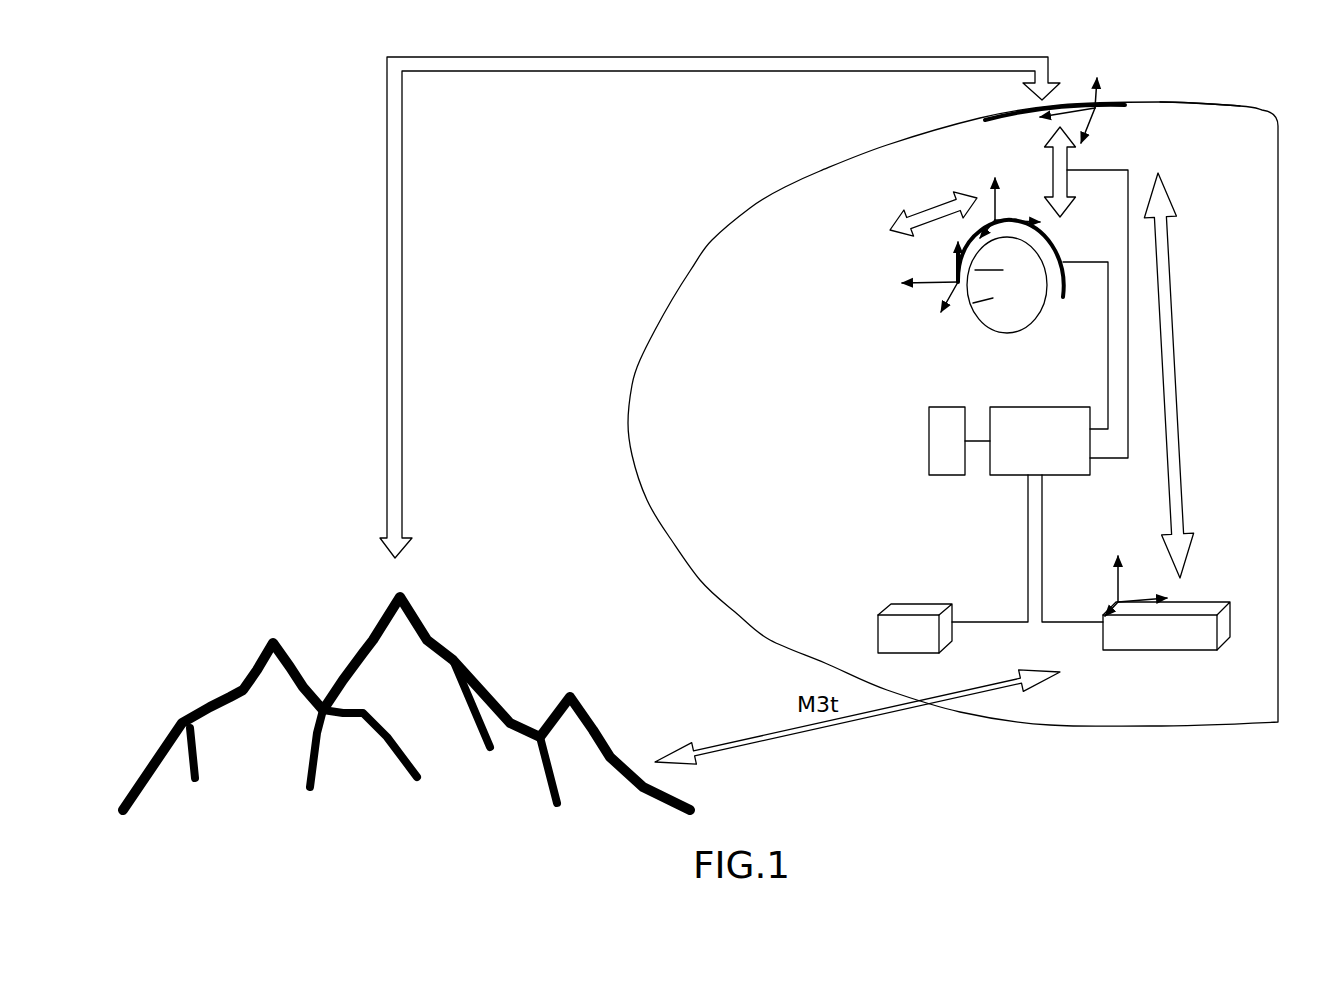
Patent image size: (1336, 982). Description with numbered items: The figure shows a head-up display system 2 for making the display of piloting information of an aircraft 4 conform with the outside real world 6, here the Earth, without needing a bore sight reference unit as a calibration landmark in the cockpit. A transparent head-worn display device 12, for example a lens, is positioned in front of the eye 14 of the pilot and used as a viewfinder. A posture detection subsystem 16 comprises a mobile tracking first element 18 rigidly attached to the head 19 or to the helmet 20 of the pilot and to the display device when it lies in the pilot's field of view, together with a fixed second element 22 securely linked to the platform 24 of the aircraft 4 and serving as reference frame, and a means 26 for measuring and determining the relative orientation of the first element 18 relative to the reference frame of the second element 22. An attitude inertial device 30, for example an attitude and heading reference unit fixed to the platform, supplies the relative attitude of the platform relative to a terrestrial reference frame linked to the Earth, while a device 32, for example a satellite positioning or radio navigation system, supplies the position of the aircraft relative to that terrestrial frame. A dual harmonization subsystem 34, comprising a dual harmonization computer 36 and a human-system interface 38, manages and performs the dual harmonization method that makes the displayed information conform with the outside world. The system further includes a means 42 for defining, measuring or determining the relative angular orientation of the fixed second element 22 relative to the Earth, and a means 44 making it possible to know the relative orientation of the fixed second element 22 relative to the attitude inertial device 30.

The head-up display system 2 is at (827, 197).
The aircraft 4 is at (756, 517).
The outside real world 6 is at (215, 655).
The transparent head-worn display device 12 is at (958, 248).
The eye 14 is at (990, 273).
The posture detection subsystem 16 is at (973, 165).
The mobile tracking first element 18 is at (1020, 215).
The head 19 is at (975, 320).
The helmet 20 is at (1063, 297).
The fixed second element 22 is at (1008, 113).
The platform 24 is at (1160, 102).
The means for measuring and determining relative orientation 26 is at (1070, 162).
The attitude inertial device 30 is at (1152, 652).
The device for supplying the position of the aircraft 32 is at (910, 612).
The dual harmonization subsystem 34 is at (978, 490).
The dual harmonization computer 36 is at (1054, 464).
The human-system interface 38 is at (929, 450).
The means for determining relative angular orientation of the fixed second element r 42 is at (585, 72).
The means for knowing the relative orientation of the fixed second element relative 44 is at (1170, 300).